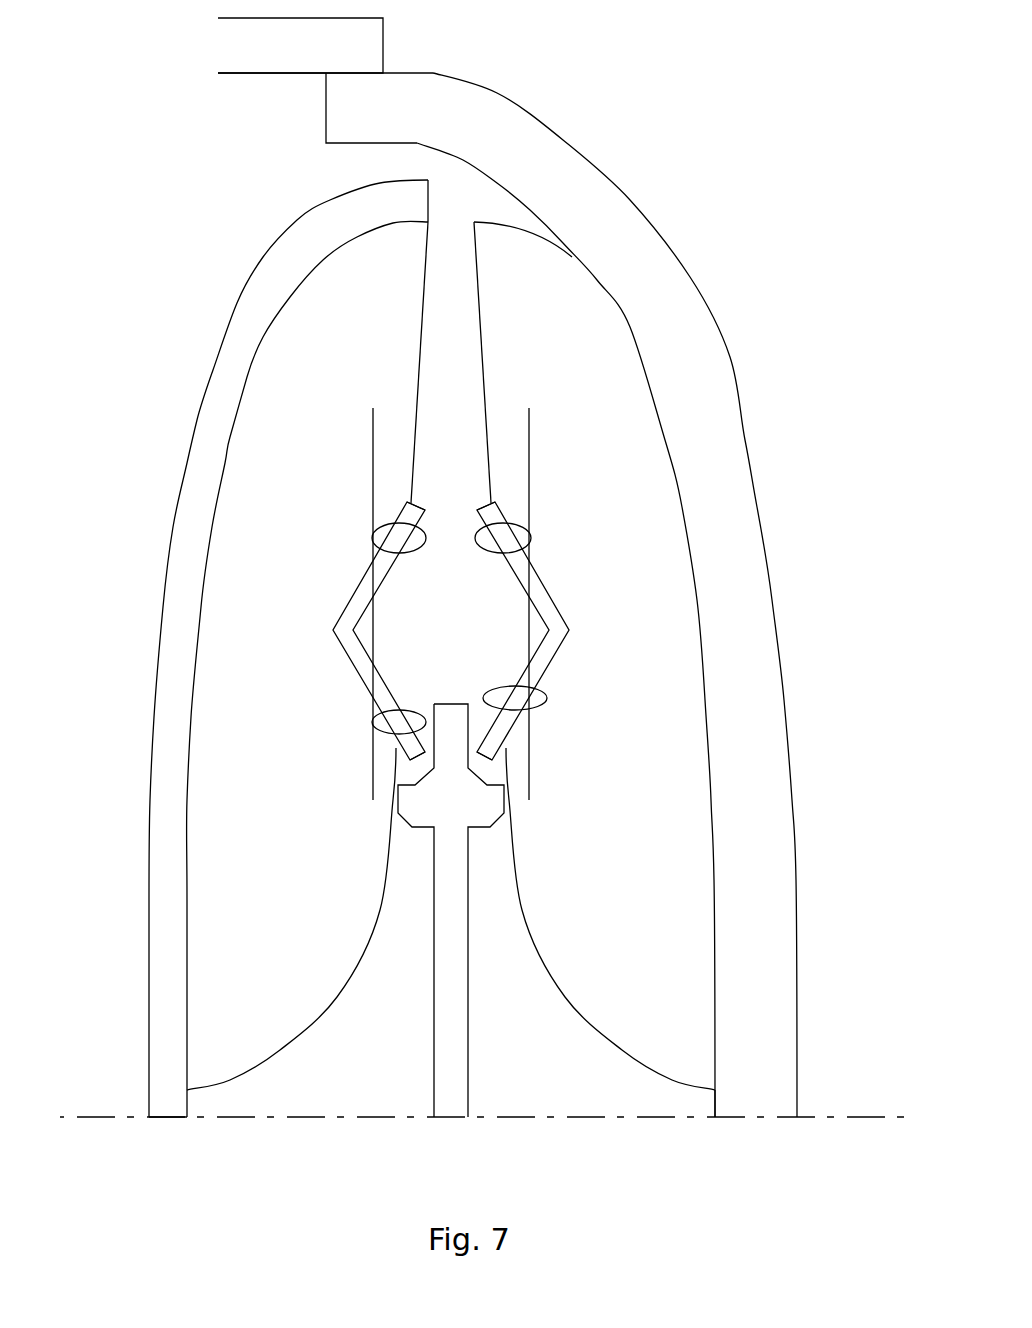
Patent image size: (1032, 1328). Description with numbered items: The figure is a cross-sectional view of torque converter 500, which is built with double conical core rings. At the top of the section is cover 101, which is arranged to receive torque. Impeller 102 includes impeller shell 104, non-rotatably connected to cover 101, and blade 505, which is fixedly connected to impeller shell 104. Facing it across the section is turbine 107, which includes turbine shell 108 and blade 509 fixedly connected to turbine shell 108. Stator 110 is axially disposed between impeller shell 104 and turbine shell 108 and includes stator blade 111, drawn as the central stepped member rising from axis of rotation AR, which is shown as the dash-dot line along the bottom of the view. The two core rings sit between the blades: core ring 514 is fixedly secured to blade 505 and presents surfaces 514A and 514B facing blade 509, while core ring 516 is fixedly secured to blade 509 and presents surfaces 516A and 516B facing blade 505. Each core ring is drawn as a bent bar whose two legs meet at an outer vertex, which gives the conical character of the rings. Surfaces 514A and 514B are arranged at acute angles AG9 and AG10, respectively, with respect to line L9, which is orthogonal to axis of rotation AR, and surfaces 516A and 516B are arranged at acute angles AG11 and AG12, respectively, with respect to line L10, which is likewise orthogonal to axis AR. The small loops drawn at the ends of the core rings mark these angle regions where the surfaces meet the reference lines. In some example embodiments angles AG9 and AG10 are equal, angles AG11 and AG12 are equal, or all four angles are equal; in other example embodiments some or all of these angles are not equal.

The torque converter 500 is at (193, 103).
The cover 101 is at (389, 47).
The impeller 102 is at (766, 307).
The impeller shell 104 is at (679, 257).
The turbine 107 is at (155, 258).
The turbine shell 108 is at (211, 373).
The stator 110 is at (389, 912).
The stator blade 111 is at (397, 997).
The blade 509 is at (371, 337).
The blade 505 is at (572, 337).
The line L10 is at (372, 432).
The line L9 is at (530, 432).
The acute angle AG11 is at (387, 533).
The acute angle AG12 is at (386, 727).
The acute angle AG9 is at (516, 533).
The acute angle AG10 is at (512, 727).
The core ring 516 is at (331, 632).
The surface 516A is at (372, 544).
The surface 516B is at (372, 722).
The core ring 514 is at (564, 661).
The surface 514A is at (531, 540).
The surface 514B is at (547, 697).
The axis of rotation AR is at (832, 1117).